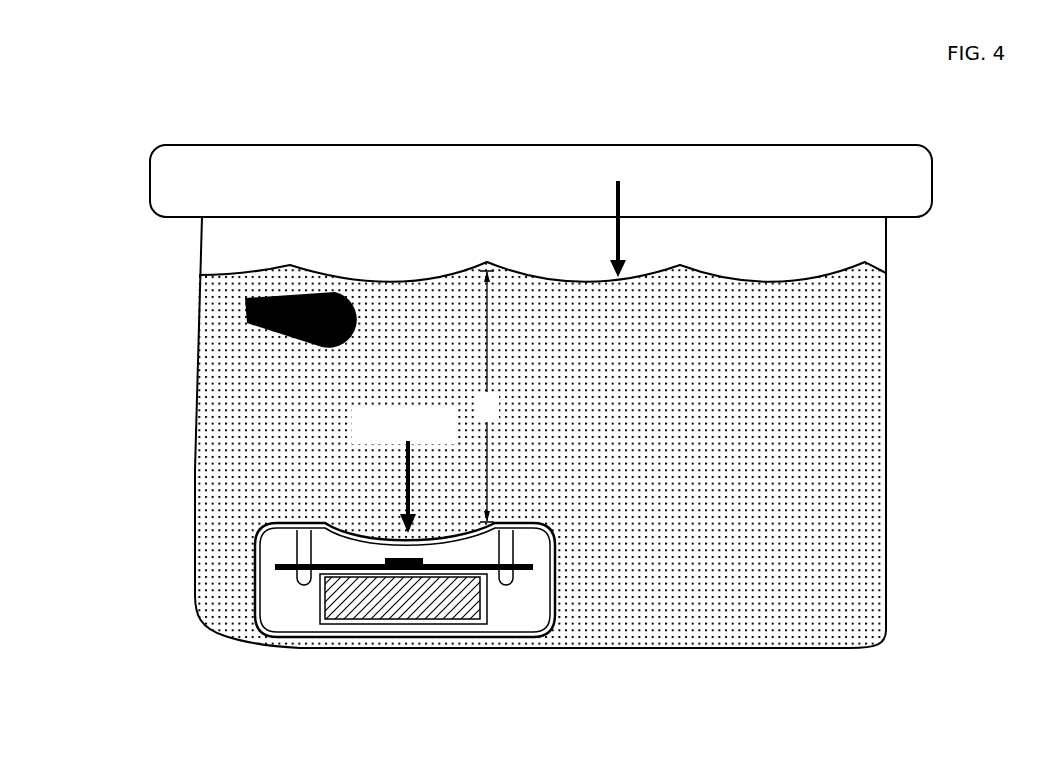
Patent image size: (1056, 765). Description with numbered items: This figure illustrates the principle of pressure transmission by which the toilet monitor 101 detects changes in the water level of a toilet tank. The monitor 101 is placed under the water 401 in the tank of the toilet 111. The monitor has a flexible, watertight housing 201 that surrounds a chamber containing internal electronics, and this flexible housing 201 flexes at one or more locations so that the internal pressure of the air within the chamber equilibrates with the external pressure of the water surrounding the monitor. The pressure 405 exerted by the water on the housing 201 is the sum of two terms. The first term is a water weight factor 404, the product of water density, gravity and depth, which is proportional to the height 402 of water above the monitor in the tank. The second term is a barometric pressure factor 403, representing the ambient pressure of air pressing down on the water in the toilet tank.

The toilet monitor 101 is at (253, 578).
The toilet 111 is at (202, 248).
The flexible housing 201 is at (392, 536).
The water 401 is at (838, 385).
The height of water above the monitor 402 is at (503, 405).
The barometric pressure factor 403 is at (627, 202).
The water weight factor 404 is at (440, 407).
The pressure exerted by the water 405 is at (397, 460).